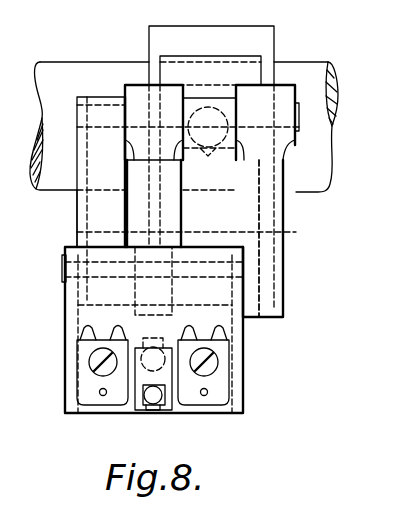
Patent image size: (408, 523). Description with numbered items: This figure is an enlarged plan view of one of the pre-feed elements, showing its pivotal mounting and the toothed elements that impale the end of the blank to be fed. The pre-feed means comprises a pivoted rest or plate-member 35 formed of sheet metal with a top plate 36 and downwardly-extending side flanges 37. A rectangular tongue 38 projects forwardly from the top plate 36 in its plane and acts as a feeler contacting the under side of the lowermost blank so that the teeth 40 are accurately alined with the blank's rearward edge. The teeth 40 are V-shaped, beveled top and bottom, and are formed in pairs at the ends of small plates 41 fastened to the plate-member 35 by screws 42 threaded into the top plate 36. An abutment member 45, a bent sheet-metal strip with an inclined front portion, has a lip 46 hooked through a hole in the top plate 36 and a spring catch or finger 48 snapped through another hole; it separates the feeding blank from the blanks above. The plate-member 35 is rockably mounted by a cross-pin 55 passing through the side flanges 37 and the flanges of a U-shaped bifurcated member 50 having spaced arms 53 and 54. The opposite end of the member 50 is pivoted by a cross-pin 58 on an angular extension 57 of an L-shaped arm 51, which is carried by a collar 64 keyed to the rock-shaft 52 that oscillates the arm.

The pivoted rest or plate-member 35 is at (252, 355).
The top plate 36 is at (228, 326).
The side flanges 37 is at (78, 308).
The tongue 38 is at (140, 203).
The teeth 40 is at (114, 331).
The plates 41 is at (90, 383).
The screws 42 is at (92, 358).
The abutment member 45 is at (133, 409).
The lip 46 is at (158, 338).
The spring catch or finger 48 is at (158, 414).
The rockable member 50 is at (69, 225).
The L-shaped arm 51 is at (262, 240).
The rock-shaft 52 is at (318, 168).
The arm 53 is at (92, 172).
The arm 54 is at (212, 208).
The cross-pin 55 is at (62, 272).
The angular extension 57 is at (268, 264).
The cross-pin 58 is at (296, 117).
The collar 64 is at (258, 48).